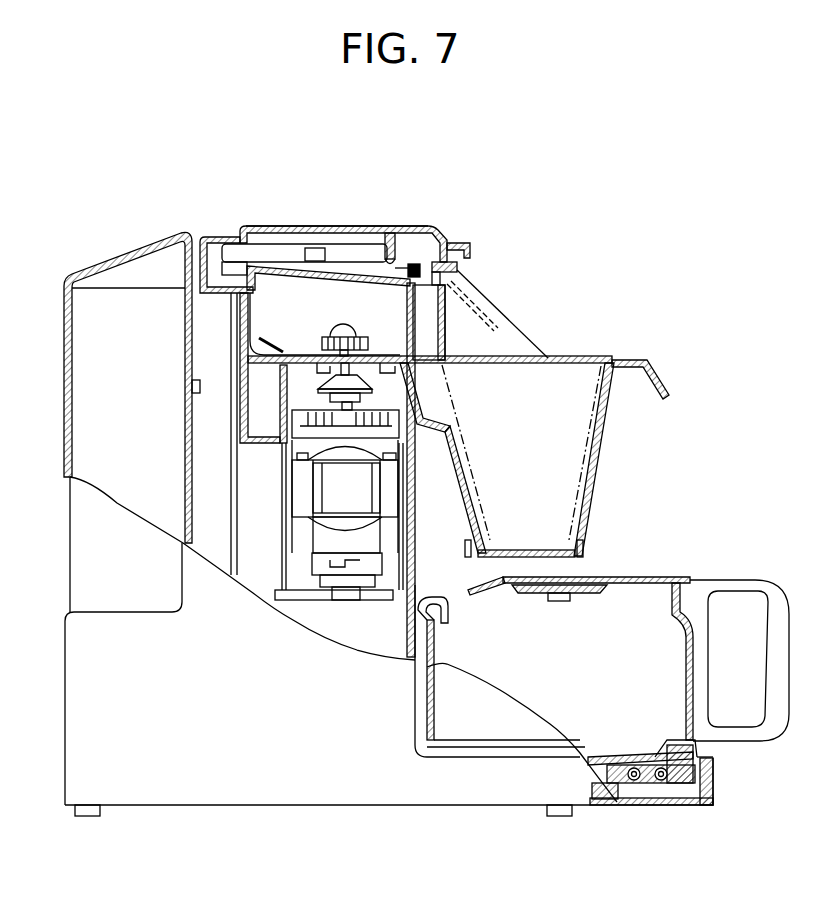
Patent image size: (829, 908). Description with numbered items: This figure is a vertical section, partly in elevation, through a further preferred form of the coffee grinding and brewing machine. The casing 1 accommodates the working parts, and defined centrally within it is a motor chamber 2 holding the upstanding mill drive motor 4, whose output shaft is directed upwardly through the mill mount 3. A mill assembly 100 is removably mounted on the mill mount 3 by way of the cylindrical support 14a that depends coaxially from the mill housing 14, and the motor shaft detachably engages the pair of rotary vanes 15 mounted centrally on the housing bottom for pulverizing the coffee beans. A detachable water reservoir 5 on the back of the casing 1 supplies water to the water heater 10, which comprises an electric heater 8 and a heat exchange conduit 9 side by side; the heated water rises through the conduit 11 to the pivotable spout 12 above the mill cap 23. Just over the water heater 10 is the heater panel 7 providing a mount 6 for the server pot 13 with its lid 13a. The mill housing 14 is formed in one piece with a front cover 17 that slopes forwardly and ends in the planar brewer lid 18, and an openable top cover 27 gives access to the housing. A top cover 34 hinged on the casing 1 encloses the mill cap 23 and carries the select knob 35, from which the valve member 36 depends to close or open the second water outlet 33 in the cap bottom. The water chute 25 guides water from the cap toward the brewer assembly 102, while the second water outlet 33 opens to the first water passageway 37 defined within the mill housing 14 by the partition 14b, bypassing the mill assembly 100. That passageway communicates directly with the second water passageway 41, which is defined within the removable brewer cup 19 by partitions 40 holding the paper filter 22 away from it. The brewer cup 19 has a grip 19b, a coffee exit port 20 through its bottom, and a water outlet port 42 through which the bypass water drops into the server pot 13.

The casing 1 is at (303, 808).
The motor chamber 2 is at (372, 641).
The mill mount 3 is at (295, 440).
The mill drive motor 4 is at (318, 492).
The water reservoir 5 is at (63, 407).
The mount 6 is at (700, 748).
The heater panel 7 is at (648, 782).
The electric heater 8 is at (667, 783).
The heat exchange conduit 9 is at (632, 782).
The water heater 10 is at (623, 782).
The conduit 11 is at (232, 488).
The spout 12 is at (263, 254).
The server pot 13 is at (698, 663).
The lid 13a is at (670, 575).
The mill housing 14 is at (305, 447).
The cylindrical support 14a is at (280, 410).
The partition 14b is at (410, 337).
The rotary vanes 15 is at (298, 349).
The front cover 17 is at (510, 318).
The brewer lid 18 is at (573, 357).
The brewer cup 19 is at (598, 451).
The grip 19b is at (658, 380).
The coffee exit port 20 is at (530, 561).
The paper filter 22 is at (482, 475).
The mill cap 23 is at (338, 274).
The water chute 25 is at (474, 303).
The top cover 27 is at (372, 228).
The second water outlet 33 is at (416, 293).
The top cover 34 is at (298, 232).
The select knob 35 is at (444, 248).
The valve member 36 is at (410, 272).
The first water passageway 37 is at (426, 323).
The partitions 40 is at (460, 431).
The second water passageway 41 is at (433, 399).
The water outlet port 42 is at (488, 557).
The mill assembly 100 is at (234, 323).
The brewer assembly 102 is at (627, 420).